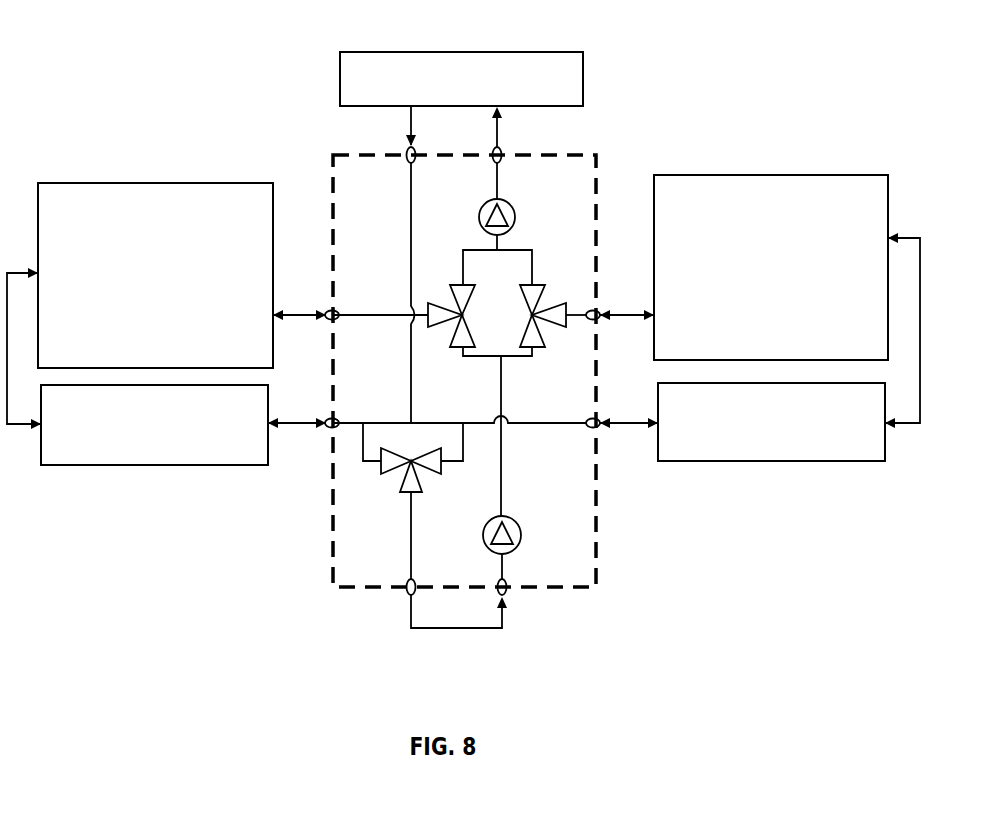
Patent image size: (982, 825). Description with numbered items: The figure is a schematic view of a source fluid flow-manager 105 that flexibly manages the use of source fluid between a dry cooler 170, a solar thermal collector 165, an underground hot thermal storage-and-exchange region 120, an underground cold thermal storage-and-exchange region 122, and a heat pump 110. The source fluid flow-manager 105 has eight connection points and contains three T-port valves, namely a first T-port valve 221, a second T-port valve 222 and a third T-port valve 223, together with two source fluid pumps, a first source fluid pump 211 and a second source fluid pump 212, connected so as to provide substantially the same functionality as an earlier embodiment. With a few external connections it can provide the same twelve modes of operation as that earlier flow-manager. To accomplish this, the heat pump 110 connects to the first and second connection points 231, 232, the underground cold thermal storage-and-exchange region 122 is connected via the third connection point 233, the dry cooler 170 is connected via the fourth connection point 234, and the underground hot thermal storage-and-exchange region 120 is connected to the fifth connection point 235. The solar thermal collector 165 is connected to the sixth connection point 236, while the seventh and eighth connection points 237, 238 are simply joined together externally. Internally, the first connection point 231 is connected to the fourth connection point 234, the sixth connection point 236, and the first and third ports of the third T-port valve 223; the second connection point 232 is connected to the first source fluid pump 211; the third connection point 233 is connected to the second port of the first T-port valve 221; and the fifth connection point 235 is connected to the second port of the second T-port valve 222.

The source fluid flow-manager 105 is at (464, 371).
The heat pump 110 is at (461, 79).
The underground hot thermal storage-and-exchange region 120 is at (771, 267).
The underground cold thermal storage-and-exchange region 122 is at (155, 275).
The solar thermal collector 165 is at (771, 422).
The dry cooler 170 is at (154, 425).
The first source fluid pump 211 is at (514, 212).
The second source fluid pump 212 is at (521, 533).
The first T-port valve 221 is at (450, 297).
The second T-port valve 222 is at (540, 290).
The third T-port valve 223 is at (405, 476).
The first connection point 231 is at (404, 152).
The second connection point 232 is at (503, 152).
The third connection point 233 is at (330, 311).
The fourth connection point 234 is at (331, 429).
The fifth connection point 235 is at (596, 309).
The sixth connection point 236 is at (597, 429).
The seventh connection point 237 is at (410, 593).
The eighth connection point 238 is at (503, 593).